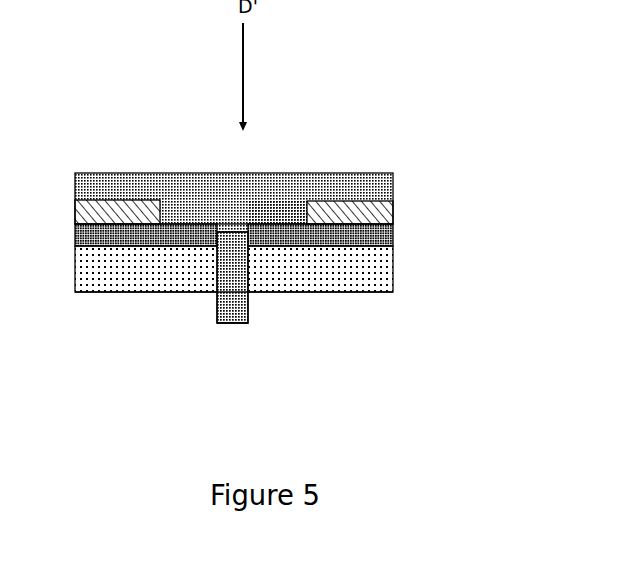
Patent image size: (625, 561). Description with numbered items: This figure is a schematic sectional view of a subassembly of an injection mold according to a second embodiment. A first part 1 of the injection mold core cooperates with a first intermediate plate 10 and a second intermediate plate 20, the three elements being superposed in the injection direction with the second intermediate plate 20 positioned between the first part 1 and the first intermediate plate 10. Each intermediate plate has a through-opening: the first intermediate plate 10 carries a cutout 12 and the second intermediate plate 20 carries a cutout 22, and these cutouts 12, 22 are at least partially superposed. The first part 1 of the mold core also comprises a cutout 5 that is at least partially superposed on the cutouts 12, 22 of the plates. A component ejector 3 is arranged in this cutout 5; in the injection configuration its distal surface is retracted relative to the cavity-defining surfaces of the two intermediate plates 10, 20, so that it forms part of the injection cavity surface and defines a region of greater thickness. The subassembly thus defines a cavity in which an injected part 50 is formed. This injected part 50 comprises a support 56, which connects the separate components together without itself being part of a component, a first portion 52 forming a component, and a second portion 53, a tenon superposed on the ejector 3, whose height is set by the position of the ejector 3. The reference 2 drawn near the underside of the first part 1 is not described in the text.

The injected part 50 is at (175, 175).
The support 56 is at (105, 183).
The first portion of the injected part 52 is at (272, 210).
The second portion of the injected part 53 is at (233, 231).
The first intermediate plate 10 is at (292, 164).
The cutout of the first intermediate plate 12 is at (297, 203).
The second intermediate plate 20 is at (399, 230).
The first part of the injection mold core 1 is at (287, 310).
The bottom surface of substrate 2 is at (292, 298).
The cutout of the first part of the injection mold core 5 is at (243, 335).
The component ejector 3 is at (237, 343).
The cutout of the second intermediate plate 22 is at (248, 323).